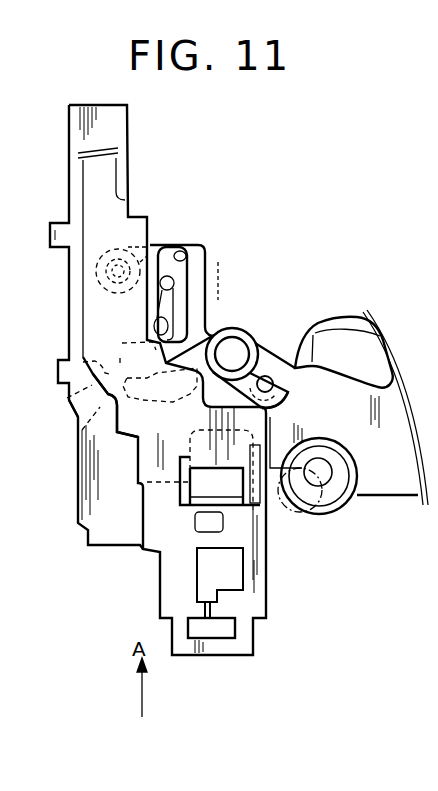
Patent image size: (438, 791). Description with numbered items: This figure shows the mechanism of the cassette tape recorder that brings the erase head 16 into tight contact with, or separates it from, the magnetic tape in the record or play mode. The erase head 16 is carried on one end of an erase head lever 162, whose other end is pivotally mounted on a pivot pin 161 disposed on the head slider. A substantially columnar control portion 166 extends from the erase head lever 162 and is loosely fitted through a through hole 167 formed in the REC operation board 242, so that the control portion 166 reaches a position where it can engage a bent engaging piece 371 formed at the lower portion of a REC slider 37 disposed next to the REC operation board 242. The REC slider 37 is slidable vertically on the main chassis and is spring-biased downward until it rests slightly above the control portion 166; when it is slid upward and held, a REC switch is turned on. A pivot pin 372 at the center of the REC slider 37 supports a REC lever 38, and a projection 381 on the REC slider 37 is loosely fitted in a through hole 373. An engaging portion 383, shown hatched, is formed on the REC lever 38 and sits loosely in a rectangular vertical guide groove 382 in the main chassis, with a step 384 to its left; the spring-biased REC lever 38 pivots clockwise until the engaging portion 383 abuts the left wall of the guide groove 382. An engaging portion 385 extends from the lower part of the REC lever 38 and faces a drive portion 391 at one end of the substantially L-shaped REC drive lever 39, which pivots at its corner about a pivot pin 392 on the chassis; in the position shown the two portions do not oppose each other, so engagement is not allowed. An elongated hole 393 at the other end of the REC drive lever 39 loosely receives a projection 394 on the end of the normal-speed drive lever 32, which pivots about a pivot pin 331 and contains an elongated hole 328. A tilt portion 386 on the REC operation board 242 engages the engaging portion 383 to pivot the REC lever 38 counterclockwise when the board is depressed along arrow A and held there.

The REC slider 37 is at (77, 460).
The REC lever 38 is at (108, 253).
The pivot pin 372 is at (172, 247).
The guide groove 382 is at (186, 250).
The through hole 373 is at (186, 258).
The projection 381 is at (175, 281).
The engaging portion 383 is at (178, 320).
The step 384 is at (157, 320).
The tilt portion 386 is at (150, 345).
The engaging portion 385 is at (78, 412).
The drive portion 391 is at (137, 395).
The pivot pin 392 is at (252, 332).
The REC drive lever 39 is at (256, 340).
The projection 394 is at (287, 381).
The elongated hole 393 is at (280, 402).
The normal-speed drive lever 32 is at (355, 318).
The elongated hole 328 is at (372, 373).
The pivot pin 331 is at (337, 465).
The pivot pin 161 is at (313, 516).
The erase head 16 is at (217, 428).
The bent engaging piece 371 is at (195, 523).
The control portion 166 is at (213, 532).
The erase head lever 162 is at (264, 520).
The through hole 167 is at (190, 552).
The REC operation board 242 is at (257, 635).